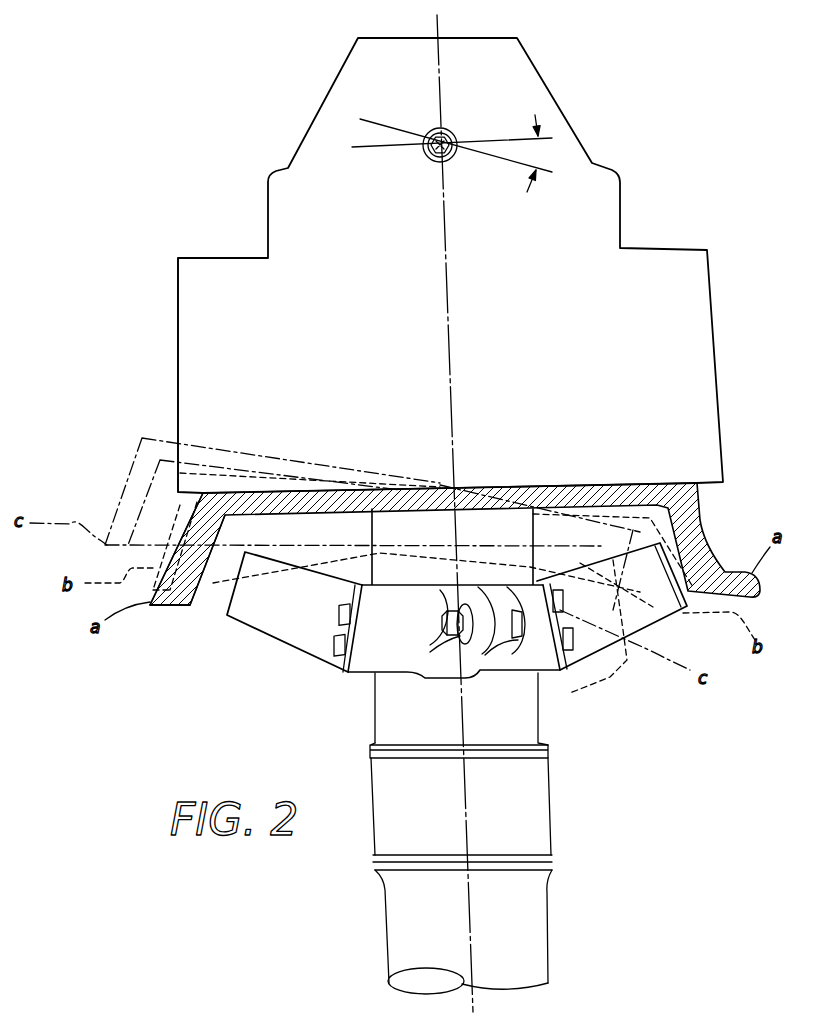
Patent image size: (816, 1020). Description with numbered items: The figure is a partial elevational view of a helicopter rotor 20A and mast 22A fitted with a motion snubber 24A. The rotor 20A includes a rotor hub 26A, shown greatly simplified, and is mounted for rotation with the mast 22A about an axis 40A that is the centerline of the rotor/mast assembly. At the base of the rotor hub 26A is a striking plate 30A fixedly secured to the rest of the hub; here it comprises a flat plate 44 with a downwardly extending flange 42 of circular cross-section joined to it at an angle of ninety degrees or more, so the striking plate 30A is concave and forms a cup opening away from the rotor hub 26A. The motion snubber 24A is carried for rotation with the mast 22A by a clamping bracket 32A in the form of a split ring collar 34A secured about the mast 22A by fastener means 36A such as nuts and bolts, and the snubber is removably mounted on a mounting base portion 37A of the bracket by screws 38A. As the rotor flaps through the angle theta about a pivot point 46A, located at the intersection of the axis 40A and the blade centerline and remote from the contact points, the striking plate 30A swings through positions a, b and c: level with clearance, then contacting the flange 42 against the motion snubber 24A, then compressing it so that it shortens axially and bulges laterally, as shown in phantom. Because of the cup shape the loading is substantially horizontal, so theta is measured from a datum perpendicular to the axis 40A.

The helicopter rotor 20A is at (602, 124).
The mast 22A is at (552, 933).
The motion snubber 24A is at (250, 615).
The rotor hub 26A is at (178, 380).
The striking plate 30A is at (160, 655).
The clamping bracket 32A is at (357, 680).
The split ring collar 34A is at (420, 639).
The fastener means 36A is at (430, 662).
The mounting base portion 37A is at (583, 665).
The screws 38A is at (335, 647).
The axis 40A is at (452, 440).
The downwardly extending flange 42 is at (168, 612).
The flat plate 44 is at (676, 487).
The pivot point 46A is at (455, 131).